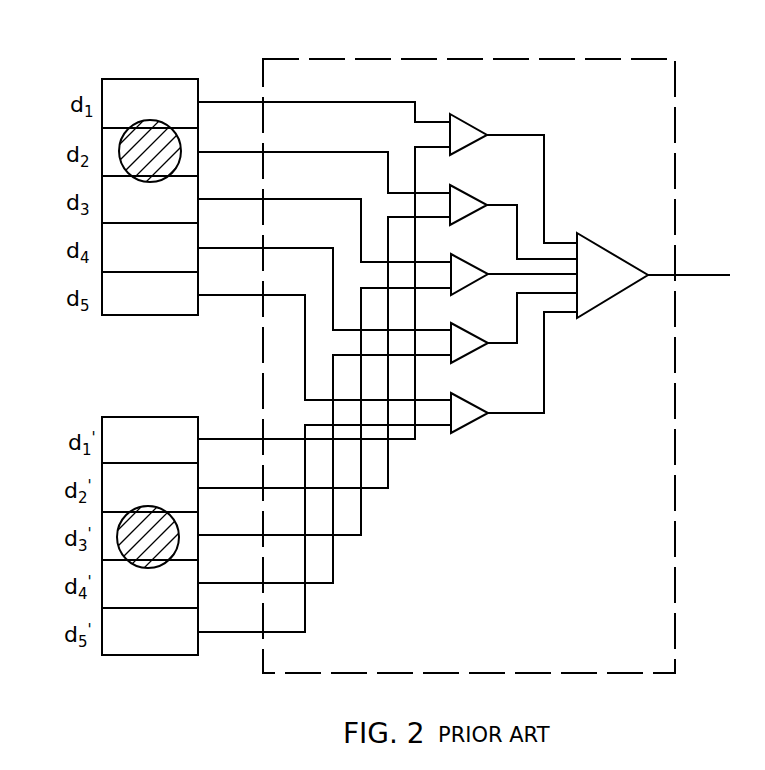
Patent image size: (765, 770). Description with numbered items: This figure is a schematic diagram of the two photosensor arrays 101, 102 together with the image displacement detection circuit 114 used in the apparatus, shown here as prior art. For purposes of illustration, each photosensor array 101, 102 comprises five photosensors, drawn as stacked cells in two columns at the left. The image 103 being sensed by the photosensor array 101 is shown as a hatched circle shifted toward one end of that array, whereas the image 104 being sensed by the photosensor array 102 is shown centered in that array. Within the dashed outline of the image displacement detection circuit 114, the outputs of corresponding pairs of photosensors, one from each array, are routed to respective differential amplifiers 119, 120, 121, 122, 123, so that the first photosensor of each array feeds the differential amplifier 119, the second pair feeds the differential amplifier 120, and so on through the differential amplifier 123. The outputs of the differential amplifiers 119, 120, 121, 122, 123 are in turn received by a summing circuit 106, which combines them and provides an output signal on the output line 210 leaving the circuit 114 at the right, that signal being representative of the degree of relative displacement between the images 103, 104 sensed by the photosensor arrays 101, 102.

The photosensor array 101 is at (158, 78).
The photosensor array 102 is at (157, 415).
The image 103 is at (118, 148).
The image 104 is at (118, 526).
The image displacement detection circuit 114 is at (498, 58).
The differential amplifier 119 is at (469, 121).
The differential amplifier 120 is at (470, 189).
The differential amplifier 121 is at (469, 262).
The differential amplifier 122 is at (469, 332).
The differential amplifier 123 is at (469, 402).
The summing circuit 106 is at (606, 244).
The output line 210 is at (699, 272).